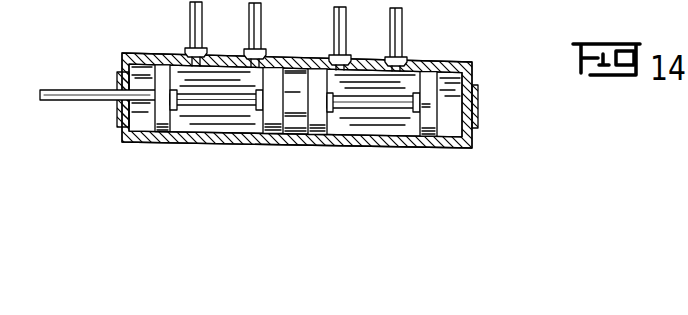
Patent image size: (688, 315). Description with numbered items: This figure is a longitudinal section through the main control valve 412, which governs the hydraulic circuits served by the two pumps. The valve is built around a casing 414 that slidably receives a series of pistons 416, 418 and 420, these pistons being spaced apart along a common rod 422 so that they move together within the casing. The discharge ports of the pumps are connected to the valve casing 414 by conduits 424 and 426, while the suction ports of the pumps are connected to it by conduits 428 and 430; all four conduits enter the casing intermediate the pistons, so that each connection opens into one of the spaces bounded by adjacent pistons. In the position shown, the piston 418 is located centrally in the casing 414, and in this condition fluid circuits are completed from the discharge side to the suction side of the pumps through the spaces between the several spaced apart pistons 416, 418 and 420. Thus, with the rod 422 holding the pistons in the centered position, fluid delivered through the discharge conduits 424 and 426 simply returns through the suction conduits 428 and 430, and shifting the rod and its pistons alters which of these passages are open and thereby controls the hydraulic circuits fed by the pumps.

The main control valve 412 is at (267, 93).
The casing 414 is at (453, 150).
The piston 416 is at (171, 119).
The piston 418 is at (263, 105).
The piston 420 is at (431, 147).
The rod 422 is at (377, 110).
The conduit 424 is at (334, 26).
The conduit 426 is at (263, 30).
The conduit 428 is at (392, 25).
The conduit 430 is at (206, 2).